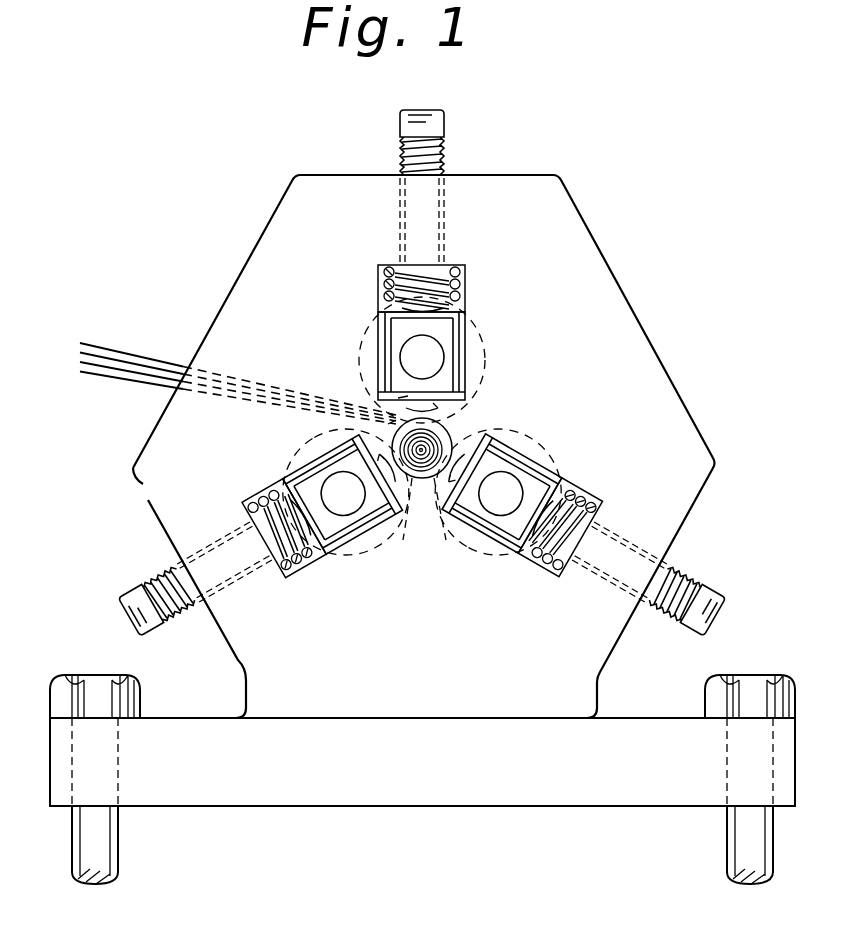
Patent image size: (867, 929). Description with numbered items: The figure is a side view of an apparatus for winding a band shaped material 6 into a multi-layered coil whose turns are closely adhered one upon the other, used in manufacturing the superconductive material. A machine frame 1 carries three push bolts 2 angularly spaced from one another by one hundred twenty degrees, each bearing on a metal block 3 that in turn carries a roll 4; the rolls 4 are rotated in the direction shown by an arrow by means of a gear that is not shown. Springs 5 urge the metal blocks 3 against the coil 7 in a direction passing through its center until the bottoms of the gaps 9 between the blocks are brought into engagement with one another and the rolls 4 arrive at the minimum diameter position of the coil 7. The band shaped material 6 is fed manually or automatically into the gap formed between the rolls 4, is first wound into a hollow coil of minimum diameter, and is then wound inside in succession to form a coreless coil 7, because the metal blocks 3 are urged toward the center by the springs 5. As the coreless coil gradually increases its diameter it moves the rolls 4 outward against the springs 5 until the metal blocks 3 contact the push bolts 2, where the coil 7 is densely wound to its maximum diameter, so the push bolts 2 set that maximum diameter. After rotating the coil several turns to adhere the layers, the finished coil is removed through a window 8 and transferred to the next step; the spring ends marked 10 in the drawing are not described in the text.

The machine frame 1 is at (626, 323).
The push bolts 2 is at (445, 152).
The metal blocks 3 is at (455, 340).
The rolls 4 is at (484, 368).
The springs 5 is at (455, 292).
The band shaped material 6 is at (147, 356).
The coil 7 is at (437, 440).
The window 8 is at (432, 496).
The gaps 9 is at (403, 397).
The spring end 10 is at (402, 270).